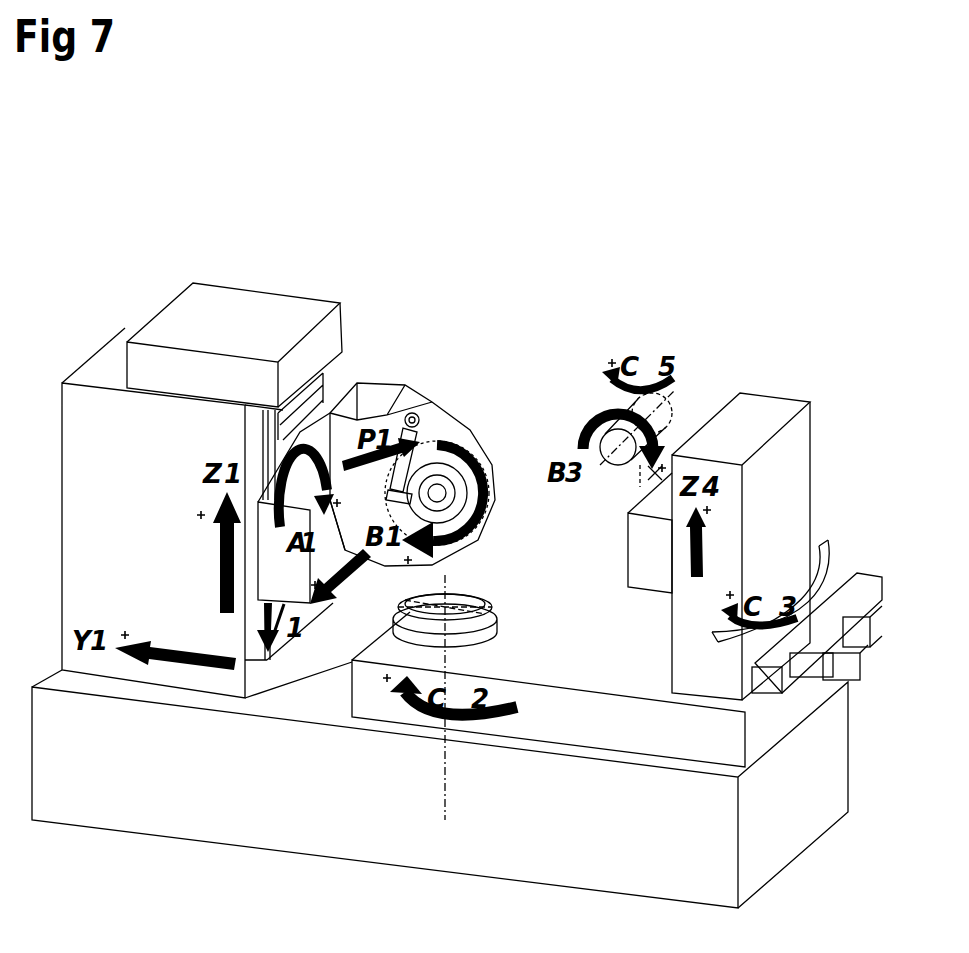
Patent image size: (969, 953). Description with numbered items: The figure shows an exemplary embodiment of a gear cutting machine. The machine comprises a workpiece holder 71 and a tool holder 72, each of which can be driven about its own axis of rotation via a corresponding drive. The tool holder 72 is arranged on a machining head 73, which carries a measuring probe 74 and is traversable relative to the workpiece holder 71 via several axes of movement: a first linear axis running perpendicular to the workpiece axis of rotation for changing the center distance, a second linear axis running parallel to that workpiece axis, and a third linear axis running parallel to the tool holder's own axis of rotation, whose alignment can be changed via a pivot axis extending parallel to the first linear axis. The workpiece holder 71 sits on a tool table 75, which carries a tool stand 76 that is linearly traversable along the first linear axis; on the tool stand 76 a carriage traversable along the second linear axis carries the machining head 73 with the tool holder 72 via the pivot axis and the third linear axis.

The workpiece holder 71 is at (460, 608).
The tool holder 72 is at (440, 490).
The machining head 73 is at (398, 365).
The measuring probe 74 is at (424, 494).
The tool table 75 is at (233, 773).
The tool stand 76 is at (77, 493).